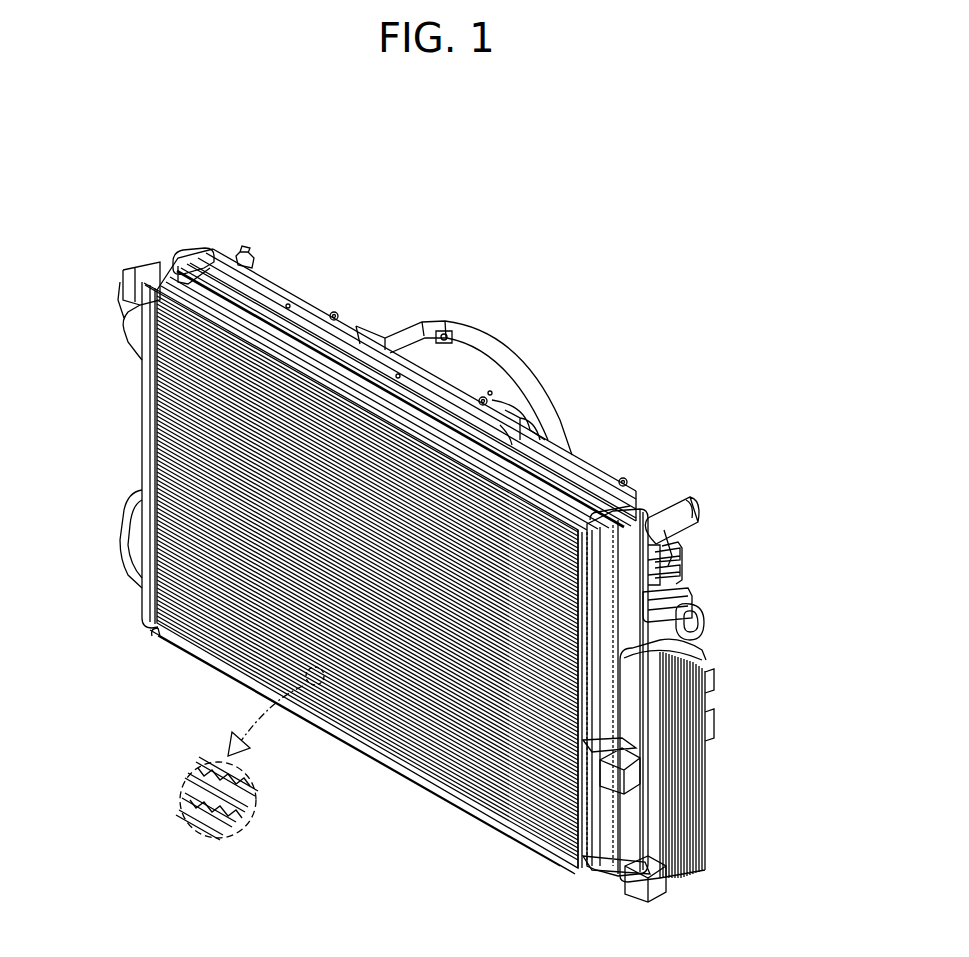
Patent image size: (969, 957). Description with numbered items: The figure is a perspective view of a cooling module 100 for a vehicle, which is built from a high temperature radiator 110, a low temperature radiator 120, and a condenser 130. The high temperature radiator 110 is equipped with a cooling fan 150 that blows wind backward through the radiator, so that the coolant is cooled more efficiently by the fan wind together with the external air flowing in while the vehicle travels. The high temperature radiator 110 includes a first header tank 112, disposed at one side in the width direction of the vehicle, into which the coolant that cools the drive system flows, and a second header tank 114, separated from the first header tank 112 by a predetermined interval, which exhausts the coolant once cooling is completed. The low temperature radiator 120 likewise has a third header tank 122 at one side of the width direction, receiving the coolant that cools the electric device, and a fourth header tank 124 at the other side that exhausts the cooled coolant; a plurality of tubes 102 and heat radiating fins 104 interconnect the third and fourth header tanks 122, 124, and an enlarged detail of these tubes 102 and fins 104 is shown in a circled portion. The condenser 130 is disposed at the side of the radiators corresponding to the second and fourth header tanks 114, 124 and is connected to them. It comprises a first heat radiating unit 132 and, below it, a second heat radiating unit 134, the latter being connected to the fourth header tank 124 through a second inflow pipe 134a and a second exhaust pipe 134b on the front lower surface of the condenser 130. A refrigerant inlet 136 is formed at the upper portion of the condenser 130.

The cooling module 100 is at (447, 161).
The tube 102 is at (205, 770).
The heat radiating fin 104 is at (220, 808).
The high temperature radiator 110 is at (210, 228).
The first header tank 112 is at (193, 256).
The second header tank 114 is at (650, 520).
The low temperature radiator 120 is at (116, 401).
The third header tank 122 is at (135, 301).
The fourth header tank 124 is at (600, 535).
The condenser 130 is at (765, 872).
The first heat radiating unit 132 is at (715, 665).
The second heat radiating unit 134 is at (715, 745).
The second inflow pipe 134a is at (622, 872).
The second exhaust pipe 134b is at (598, 752).
The refrigerant inlet 136 is at (703, 660).
The cooling fan 150 is at (475, 352).